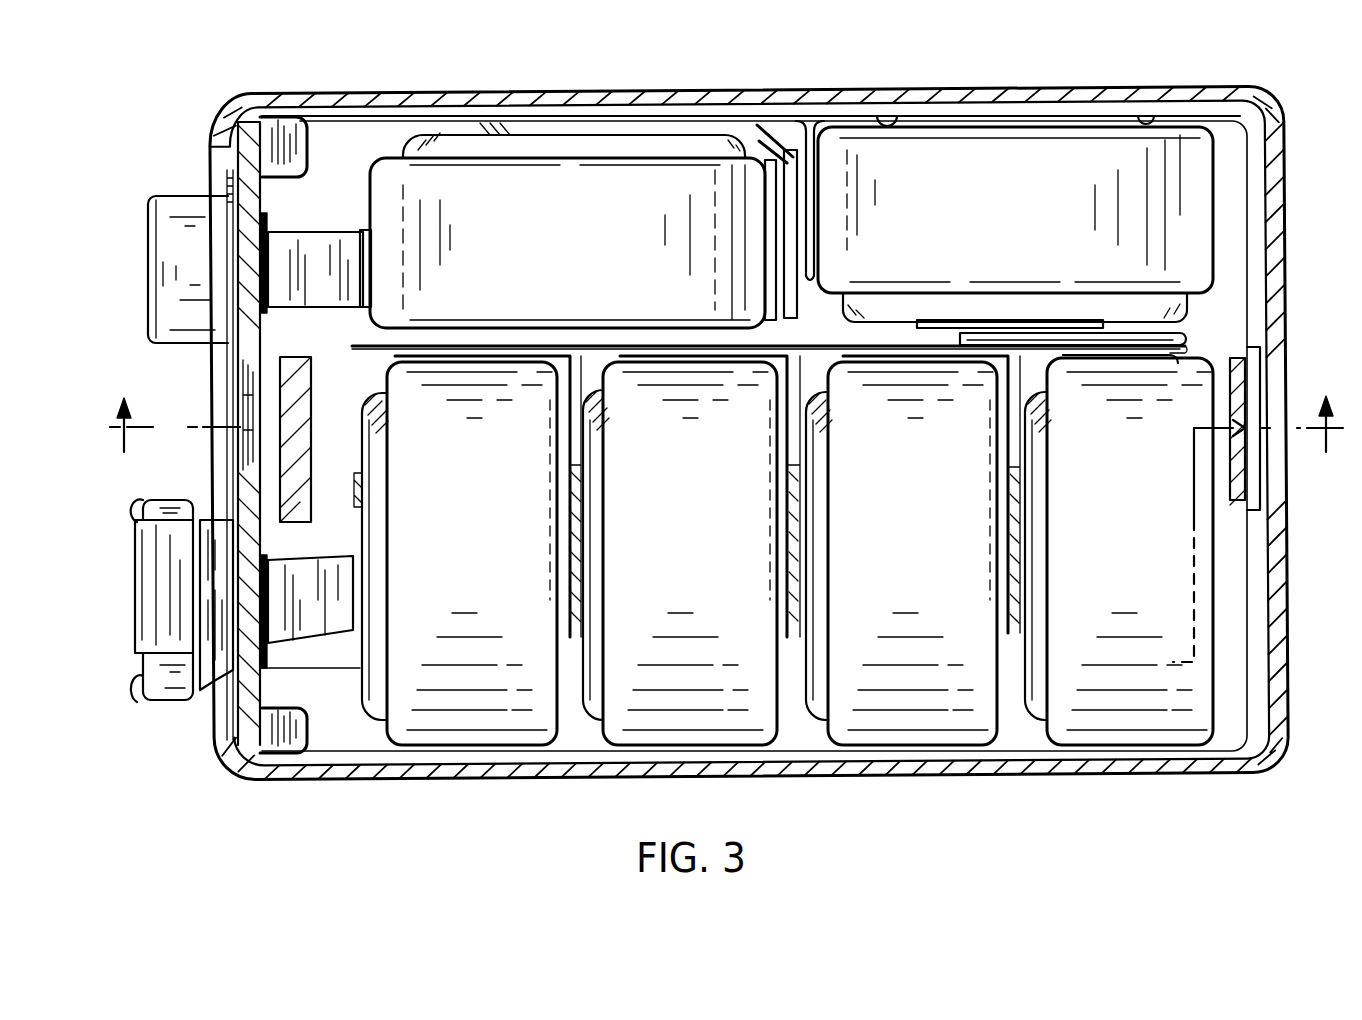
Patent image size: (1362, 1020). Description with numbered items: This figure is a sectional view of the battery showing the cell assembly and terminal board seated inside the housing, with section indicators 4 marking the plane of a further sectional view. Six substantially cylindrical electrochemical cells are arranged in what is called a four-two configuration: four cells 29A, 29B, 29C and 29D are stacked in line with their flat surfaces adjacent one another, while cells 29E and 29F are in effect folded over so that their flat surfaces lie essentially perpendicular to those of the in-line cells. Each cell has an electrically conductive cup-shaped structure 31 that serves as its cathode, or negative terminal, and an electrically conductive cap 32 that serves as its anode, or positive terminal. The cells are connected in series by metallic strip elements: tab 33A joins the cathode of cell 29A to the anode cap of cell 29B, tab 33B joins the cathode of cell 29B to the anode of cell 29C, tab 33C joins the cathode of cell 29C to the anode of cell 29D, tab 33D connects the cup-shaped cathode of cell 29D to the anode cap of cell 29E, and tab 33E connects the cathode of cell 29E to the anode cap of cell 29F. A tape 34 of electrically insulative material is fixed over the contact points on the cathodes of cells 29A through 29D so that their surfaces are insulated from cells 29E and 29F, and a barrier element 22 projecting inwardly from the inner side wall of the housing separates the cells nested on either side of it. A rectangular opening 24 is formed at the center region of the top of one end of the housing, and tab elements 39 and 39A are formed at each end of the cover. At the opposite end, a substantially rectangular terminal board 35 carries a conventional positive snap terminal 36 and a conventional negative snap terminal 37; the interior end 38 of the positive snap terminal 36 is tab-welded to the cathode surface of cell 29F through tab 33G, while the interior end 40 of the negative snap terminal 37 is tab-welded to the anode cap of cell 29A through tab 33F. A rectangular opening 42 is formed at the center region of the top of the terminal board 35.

The section line 4- 4 is at (726, 439).
The barrier element 22 is at (800, 298).
The rectangular opening 24 is at (1267, 392).
The electrochemical cell 29A is at (470, 722).
The electrochemical cell 29B is at (695, 707).
The electrochemical cell 29C is at (938, 720).
The electrochemical cell 29D is at (1127, 720).
The electrochemical cell 29E is at (1045, 142).
The electrochemical cell 29F is at (563, 177).
The cup-shaped structure 31 is at (566, 241).
The cap 32 is at (627, 133).
The conductive strip element 33A is at (572, 452).
The conductive strip element 33B is at (788, 452).
The conductive strip element 33C is at (1010, 452).
The conductive strip element 33D is at (1175, 340).
The conductive strip element 33E is at (717, 118).
The conductive strip element 33F is at (340, 568).
The conductive strip element 33G is at (325, 245).
The tape 34 is at (515, 345).
The terminal board 35 is at (220, 762).
The positive snap terminal 36 is at (155, 208).
The negative snap terminal 37 is at (173, 703).
The interior end 38 is at (263, 222).
The tab element 39 is at (295, 412).
The tab element 39A is at (1245, 455).
The interior end 40 is at (265, 668).
The rectangular opening 42 is at (243, 387).